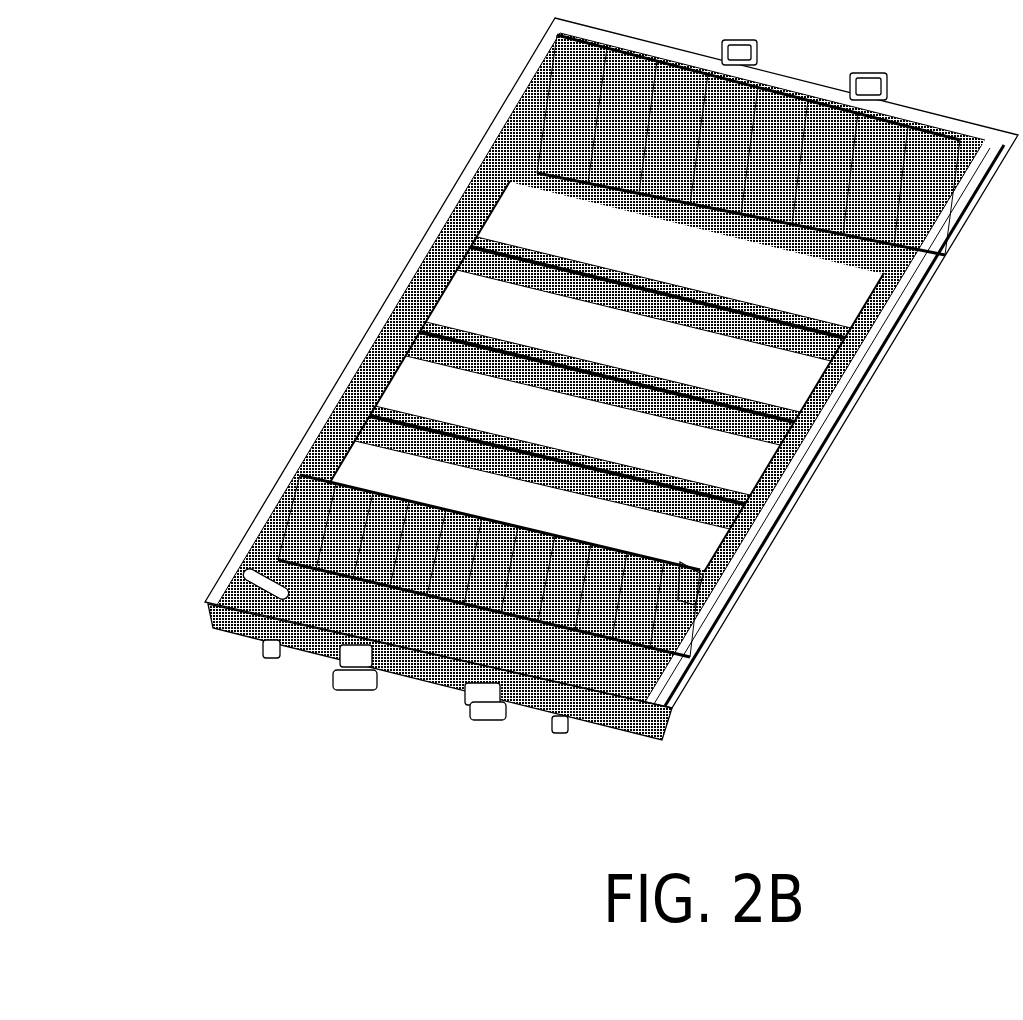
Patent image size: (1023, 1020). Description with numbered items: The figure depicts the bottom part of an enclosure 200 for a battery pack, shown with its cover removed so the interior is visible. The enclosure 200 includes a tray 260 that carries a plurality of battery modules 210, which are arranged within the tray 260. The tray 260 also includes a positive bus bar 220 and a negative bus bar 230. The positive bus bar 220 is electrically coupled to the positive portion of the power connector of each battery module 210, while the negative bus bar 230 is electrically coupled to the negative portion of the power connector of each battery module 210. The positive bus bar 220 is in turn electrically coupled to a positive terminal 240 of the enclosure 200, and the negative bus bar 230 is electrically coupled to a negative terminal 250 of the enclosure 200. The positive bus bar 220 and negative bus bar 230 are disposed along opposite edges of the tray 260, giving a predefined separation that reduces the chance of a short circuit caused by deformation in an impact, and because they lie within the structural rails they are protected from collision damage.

The enclosure 200 is at (567, 418).
The battery modules 210 is at (611, 379).
The positive bus bar 220 is at (385, 375).
The negative bus bar 230 is at (790, 415).
The positive terminal 240 is at (272, 660).
The negative terminal 250 is at (560, 735).
The tray 260 is at (427, 186).